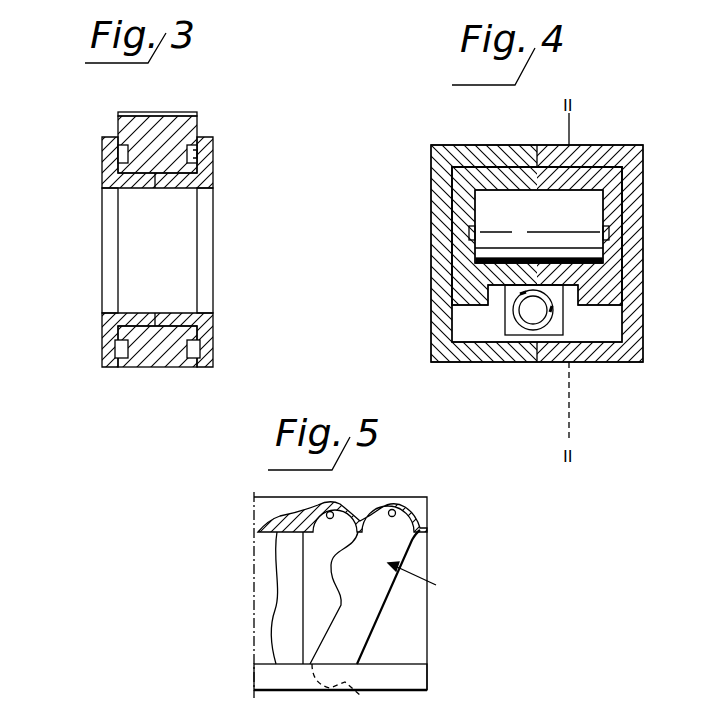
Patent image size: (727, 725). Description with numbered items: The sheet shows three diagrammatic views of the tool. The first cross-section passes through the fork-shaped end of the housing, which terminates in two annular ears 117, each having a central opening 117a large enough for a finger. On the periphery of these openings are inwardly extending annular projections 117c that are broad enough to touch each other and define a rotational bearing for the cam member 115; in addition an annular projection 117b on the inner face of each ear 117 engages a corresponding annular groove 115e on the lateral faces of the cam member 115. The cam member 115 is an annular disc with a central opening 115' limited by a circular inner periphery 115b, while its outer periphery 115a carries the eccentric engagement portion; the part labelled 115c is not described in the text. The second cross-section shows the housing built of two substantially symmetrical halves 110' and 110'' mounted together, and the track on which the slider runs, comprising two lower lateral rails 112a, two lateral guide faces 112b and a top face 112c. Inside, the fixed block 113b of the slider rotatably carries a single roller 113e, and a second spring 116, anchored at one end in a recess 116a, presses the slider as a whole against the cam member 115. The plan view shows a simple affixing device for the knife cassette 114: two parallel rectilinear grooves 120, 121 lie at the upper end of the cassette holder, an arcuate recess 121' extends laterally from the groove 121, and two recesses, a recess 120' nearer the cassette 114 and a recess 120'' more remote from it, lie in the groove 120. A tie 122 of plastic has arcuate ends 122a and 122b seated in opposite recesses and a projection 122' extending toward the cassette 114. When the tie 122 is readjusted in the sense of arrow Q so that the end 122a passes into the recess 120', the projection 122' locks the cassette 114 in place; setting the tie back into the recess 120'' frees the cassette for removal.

In FIG. 3, the cam member 115 is at (129, 139).
In FIG. 3, the top plate of cover block 115c is at (195, 112).
In FIG. 3, the annular grooves 115e is at (120, 160).
In FIG. 3, the annular projection 117b is at (196, 156).
In FIG. 3, the circular inner periphery 115b is at (156, 187).
In FIG. 3, the central opening 115' is at (150, 253).
In FIG. 3, the annular projections 117c is at (155, 313).
In FIG. 3, the central opening 117a is at (103, 317).
In FIG. 3, the annular ears 117 is at (210, 352).
In FIG. 3, the outer periphery 115a is at (152, 368).
In FIG. 4, the top face 112c is at (597, 152).
In FIG. 4, the lateral guide faces 112b is at (456, 229).
In FIG. 4, the single roller 113e is at (548, 222).
In FIG. 4, the fixed block 113b is at (615, 258).
In FIG. 4, the lower lateral rails 112a is at (470, 297).
In FIG. 4, the second spring 116 is at (522, 318).
In FIG. 4, the recess 116a is at (545, 343).
In FIG. 4, the housing half 110' is at (537, 267).
In FIG. 4, the housing half 110'' is at (538, 267).
In FIG. 5, the rectilinear groove 120 is at (363, 517).
In FIG. 5, the recess 120' is at (322, 499).
In FIG. 5, the recess 120'' is at (401, 498).
In FIG. 5, the tie end 122a is at (414, 546).
In FIG. 5, the arrow Q is at (419, 573).
In FIG. 5, the knife cassette 114 is at (276, 580).
In FIG. 5, the projection 122' is at (276, 583).
In FIG. 5, the tie 122 is at (390, 597).
In FIG. 5, the rectilinear groove 121 is at (362, 677).
In FIG. 5, the tie end 122b is at (325, 688).
In FIG. 5, the arcuate recess 121' is at (377, 705).